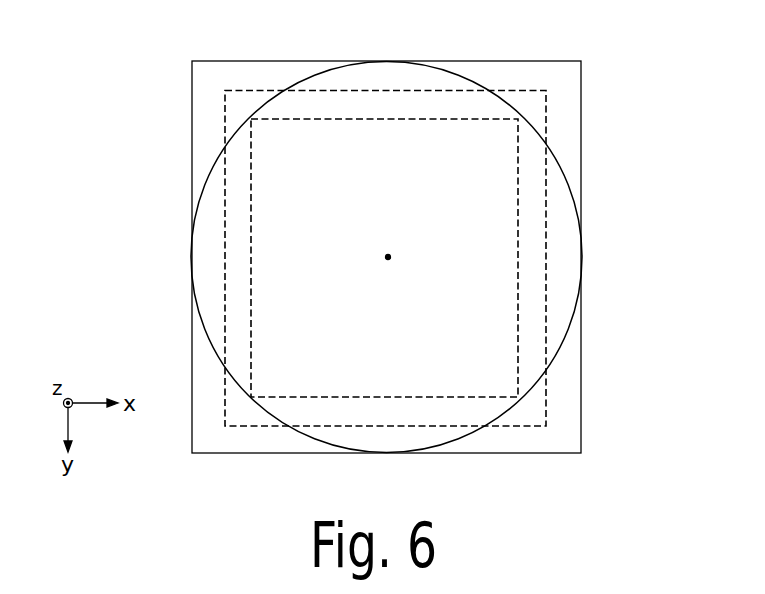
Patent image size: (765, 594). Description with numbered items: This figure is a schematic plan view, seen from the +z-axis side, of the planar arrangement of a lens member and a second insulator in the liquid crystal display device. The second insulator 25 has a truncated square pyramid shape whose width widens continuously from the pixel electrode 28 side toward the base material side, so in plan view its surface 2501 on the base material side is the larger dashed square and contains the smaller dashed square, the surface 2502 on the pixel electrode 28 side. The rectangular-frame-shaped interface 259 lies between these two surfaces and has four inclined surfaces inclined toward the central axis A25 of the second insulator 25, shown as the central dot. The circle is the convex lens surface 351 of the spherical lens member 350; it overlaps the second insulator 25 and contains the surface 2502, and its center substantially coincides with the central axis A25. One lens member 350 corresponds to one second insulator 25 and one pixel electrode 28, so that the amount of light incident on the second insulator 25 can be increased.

The pixel electrode 28 is at (583, 125).
The lens member 350 is at (393, 233).
The convex lens surface 351 is at (480, 82).
The second insulator 25 is at (460, 259).
The surface of the second insulator on the base material side 2501 is at (546, 237).
The surface of the second insulator on the pixel electrode side 2502 is at (521, 268).
The interface 259 is at (473, 258).
The central axis of the second insulator A25 is at (389, 261).